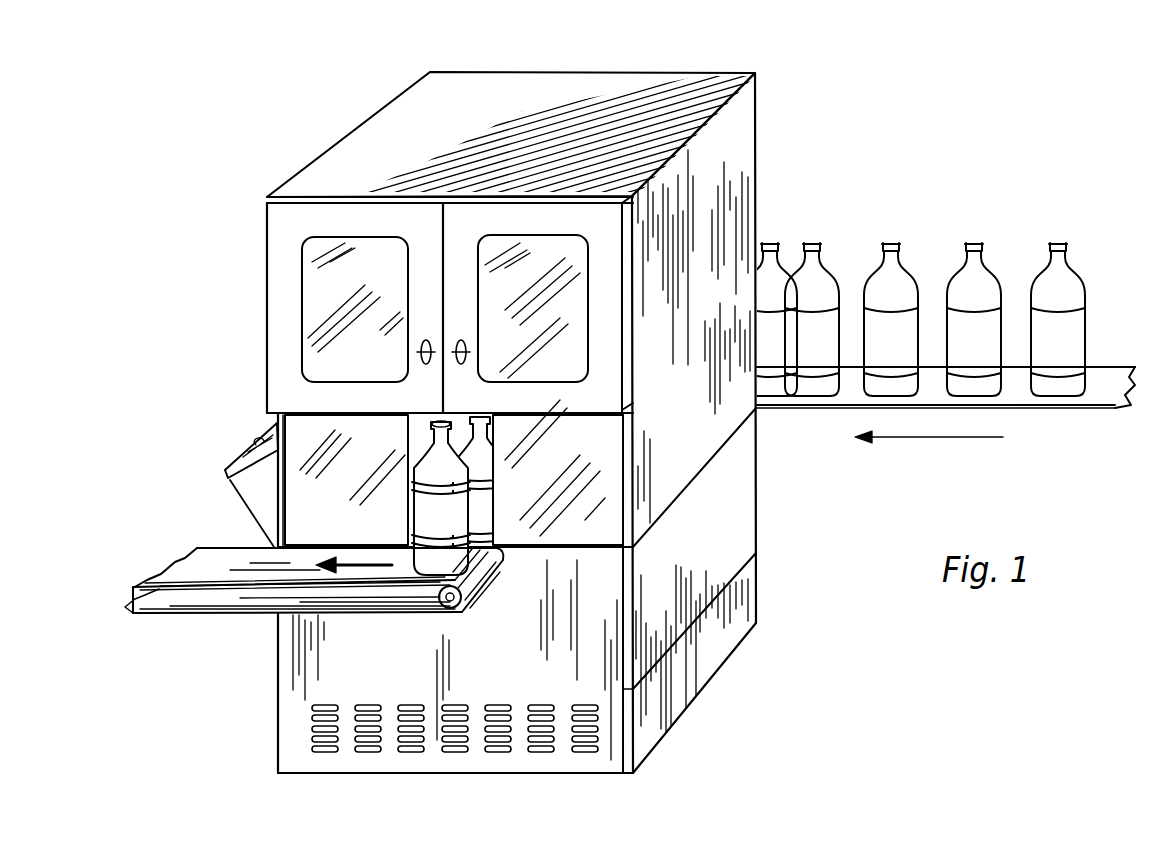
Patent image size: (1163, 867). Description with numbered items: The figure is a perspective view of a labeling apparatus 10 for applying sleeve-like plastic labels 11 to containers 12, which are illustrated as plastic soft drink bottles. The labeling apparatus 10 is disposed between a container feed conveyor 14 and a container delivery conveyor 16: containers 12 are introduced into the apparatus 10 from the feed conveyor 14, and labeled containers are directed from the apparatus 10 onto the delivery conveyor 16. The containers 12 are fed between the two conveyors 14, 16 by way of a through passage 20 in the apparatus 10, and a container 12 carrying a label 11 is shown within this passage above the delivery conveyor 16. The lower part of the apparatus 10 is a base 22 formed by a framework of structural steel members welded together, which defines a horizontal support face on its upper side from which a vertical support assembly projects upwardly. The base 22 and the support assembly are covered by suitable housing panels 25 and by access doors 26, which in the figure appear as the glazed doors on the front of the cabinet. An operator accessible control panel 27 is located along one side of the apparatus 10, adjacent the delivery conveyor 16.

The bottle inspection machine 10 is at (790, 182).
The label 11 is at (416, 504).
The bottles 12 is at (1073, 293).
The inlet conveyor 14 is at (832, 398).
The outlet conveyor 16 is at (232, 548).
The bottle cap 20 is at (414, 421).
The lower housing 22 is at (314, 663).
The panels 25 is at (582, 158).
The doors 26 is at (495, 222).
The reject chute 27 is at (229, 446).